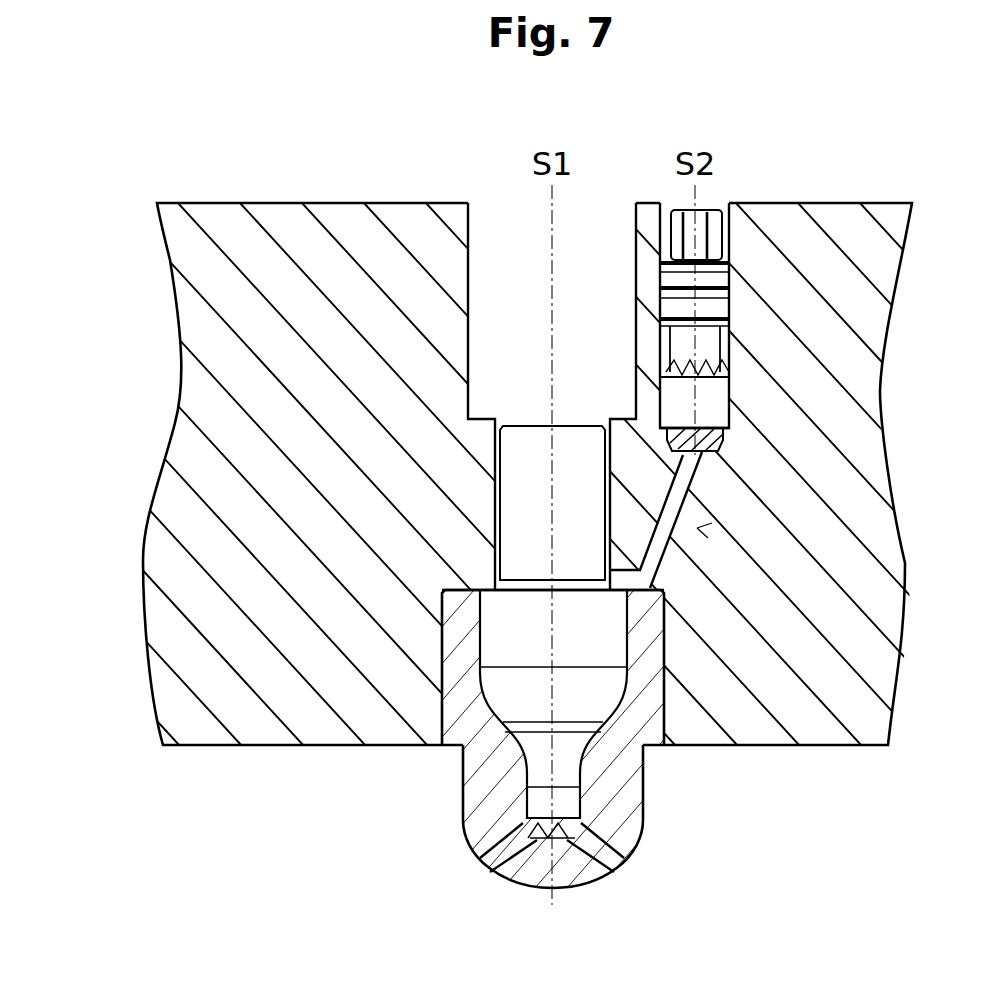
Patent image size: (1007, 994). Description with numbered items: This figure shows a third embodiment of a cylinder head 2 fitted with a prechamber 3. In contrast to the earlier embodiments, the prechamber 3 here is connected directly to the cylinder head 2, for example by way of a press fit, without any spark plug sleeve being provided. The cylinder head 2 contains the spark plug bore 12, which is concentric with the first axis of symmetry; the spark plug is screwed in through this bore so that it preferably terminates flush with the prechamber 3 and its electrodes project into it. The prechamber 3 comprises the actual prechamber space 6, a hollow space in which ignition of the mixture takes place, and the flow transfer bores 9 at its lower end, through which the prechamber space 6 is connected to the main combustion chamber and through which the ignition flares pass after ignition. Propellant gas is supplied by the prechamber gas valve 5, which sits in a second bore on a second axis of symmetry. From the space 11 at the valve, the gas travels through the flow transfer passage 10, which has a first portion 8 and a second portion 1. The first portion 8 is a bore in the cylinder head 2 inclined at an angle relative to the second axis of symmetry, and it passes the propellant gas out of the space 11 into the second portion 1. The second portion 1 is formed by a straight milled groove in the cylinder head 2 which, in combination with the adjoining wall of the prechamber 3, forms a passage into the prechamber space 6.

The second portion 1 is at (660, 588).
The cylinder head 2 is at (830, 270).
The prechamber 3 is at (630, 777).
The prechamber gas valve 5 is at (713, 407).
The prechamber space 6 is at (504, 651).
The first portion 8 is at (678, 503).
The flow transfer bores 9 is at (607, 855).
The flow transfer passage 10 is at (697, 528).
The space 11 is at (707, 438).
The spark plug bore 12 is at (520, 470).